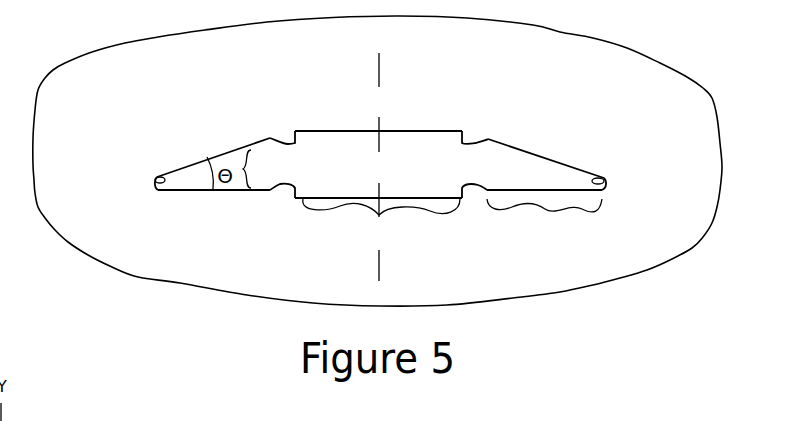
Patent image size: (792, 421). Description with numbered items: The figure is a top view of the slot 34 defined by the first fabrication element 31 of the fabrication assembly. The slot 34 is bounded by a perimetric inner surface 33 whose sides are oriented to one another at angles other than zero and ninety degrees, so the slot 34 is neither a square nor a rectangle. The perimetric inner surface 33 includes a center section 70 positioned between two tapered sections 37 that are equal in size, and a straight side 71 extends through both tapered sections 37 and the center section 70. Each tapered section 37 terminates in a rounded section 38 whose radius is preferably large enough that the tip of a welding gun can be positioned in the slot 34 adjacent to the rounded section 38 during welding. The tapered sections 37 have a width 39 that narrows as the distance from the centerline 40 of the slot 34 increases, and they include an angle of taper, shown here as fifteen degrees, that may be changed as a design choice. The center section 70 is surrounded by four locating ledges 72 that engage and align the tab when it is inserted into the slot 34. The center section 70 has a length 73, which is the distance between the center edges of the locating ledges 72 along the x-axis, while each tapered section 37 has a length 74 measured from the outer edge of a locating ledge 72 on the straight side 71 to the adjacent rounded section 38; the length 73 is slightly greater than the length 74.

The first fabrication element 31 is at (712, 91).
The perimetric inner surface 33 is at (195, 190).
The slot 34 is at (412, 96).
The tapered sections 37 is at (222, 152).
The rounded section 38 is at (156, 182).
The width 39 is at (260, 169).
The centerline 40 is at (376, 252).
The center section 70 is at (347, 199).
The straight side 71 is at (420, 199).
The locating ledges 72 is at (466, 140).
The length 73 is at (378, 220).
The length 74 is at (544, 216).